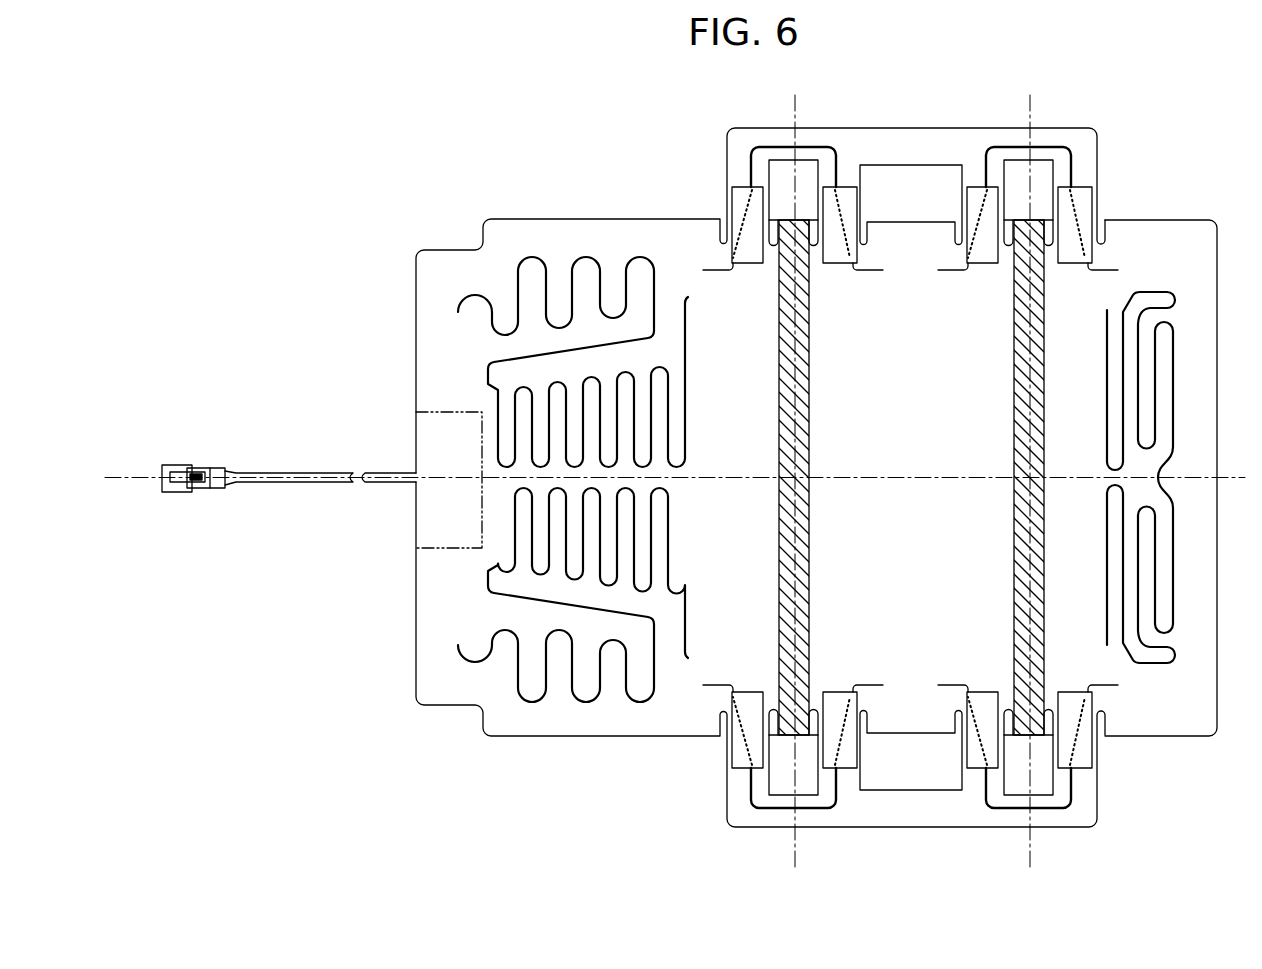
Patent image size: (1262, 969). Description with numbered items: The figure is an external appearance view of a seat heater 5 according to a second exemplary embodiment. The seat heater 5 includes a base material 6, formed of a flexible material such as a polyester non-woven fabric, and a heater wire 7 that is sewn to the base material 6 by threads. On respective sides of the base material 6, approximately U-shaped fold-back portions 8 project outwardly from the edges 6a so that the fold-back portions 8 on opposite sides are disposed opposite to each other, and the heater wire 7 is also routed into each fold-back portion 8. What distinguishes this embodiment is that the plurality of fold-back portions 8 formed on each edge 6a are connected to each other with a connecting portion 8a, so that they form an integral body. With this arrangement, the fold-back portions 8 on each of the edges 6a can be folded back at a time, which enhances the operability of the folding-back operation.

The seat heater 5 is at (383, 96).
The base material 6 is at (435, 353).
The edge 6a is at (1165, 220).
The heater wire 7 is at (533, 255).
The fold-back portion 8 is at (740, 143).
The connecting portion 8a is at (902, 142).